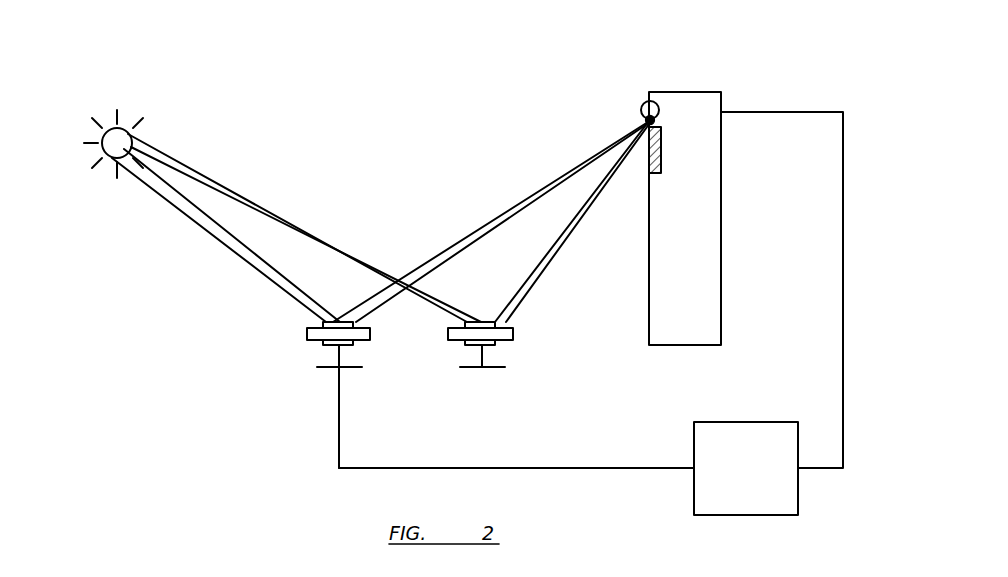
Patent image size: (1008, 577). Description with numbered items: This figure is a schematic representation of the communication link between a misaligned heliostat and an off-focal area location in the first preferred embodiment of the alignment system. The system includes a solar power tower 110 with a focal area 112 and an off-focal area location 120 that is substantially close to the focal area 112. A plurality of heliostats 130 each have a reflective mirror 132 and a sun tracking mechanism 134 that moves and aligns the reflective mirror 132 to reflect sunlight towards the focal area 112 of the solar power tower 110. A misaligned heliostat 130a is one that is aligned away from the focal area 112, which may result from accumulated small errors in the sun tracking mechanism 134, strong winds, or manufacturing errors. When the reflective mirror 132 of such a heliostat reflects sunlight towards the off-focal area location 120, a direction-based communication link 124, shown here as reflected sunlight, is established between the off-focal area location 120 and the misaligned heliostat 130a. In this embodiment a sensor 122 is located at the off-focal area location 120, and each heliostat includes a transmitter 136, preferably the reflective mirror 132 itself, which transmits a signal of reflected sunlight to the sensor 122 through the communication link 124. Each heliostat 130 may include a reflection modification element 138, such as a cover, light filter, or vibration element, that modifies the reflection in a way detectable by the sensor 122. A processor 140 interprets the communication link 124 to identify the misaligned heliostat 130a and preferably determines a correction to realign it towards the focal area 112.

The solar power tower 110 is at (724, 289).
The focal area 112 is at (665, 148).
The off-focal area location 120 is at (659, 104).
The sensor 122 is at (643, 120).
The communication link 124 is at (521, 180).
The heliostat 130 is at (544, 352).
The misaligned heliostat 130a is at (224, 400).
The reflective mirror 132 is at (370, 320).
The sun tracking mechanism 134 is at (321, 369).
The transmitter 136 is at (313, 321).
The reflection modification element 138 is at (321, 345).
The processor 140 is at (591, 313).